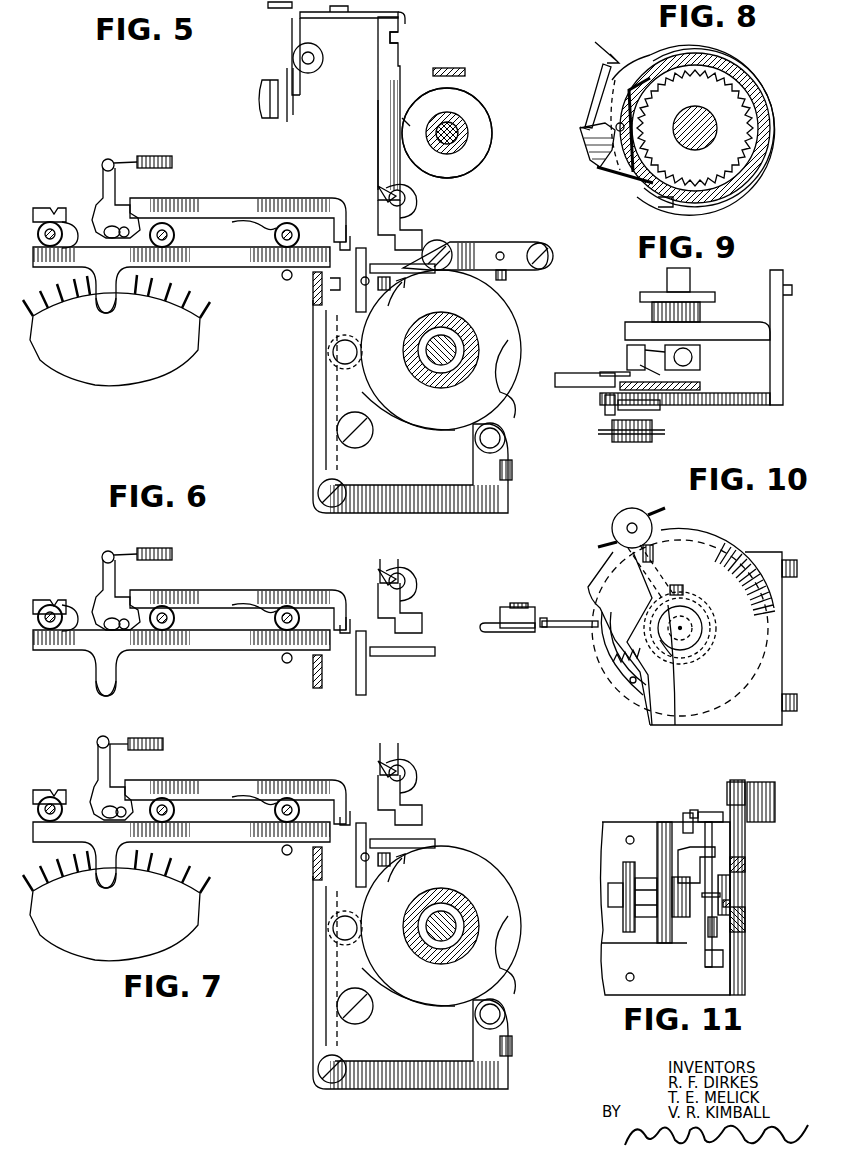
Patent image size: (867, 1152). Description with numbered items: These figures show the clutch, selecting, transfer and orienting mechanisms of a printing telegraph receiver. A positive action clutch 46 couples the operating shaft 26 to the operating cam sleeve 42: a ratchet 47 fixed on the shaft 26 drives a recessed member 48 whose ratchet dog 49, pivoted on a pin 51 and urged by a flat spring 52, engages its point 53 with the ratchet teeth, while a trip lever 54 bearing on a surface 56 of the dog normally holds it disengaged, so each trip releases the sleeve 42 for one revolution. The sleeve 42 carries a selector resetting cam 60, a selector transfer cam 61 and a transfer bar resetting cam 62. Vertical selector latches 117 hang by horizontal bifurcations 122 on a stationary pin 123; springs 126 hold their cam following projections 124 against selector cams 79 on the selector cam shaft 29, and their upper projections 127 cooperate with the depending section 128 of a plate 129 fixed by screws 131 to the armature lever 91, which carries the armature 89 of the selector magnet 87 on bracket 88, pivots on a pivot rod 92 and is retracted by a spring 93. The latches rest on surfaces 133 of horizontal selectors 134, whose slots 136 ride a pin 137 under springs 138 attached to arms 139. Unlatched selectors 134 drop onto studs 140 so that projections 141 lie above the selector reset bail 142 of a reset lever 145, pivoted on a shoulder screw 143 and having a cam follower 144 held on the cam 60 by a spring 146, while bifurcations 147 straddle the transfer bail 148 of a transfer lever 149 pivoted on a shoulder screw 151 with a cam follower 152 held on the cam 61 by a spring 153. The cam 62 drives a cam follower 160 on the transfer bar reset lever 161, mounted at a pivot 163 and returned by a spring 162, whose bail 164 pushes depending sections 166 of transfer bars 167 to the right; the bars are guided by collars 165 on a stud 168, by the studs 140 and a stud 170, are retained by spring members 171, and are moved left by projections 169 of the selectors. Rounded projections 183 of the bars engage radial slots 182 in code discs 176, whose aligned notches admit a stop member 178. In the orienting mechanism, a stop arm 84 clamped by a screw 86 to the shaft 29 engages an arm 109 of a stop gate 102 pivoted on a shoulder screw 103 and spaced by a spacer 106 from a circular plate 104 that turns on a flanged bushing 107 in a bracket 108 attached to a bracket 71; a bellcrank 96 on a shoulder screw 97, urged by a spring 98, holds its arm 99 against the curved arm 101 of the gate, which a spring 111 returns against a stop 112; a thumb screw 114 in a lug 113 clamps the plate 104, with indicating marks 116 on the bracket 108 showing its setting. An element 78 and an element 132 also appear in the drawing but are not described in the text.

In FIG. 5, the shaft 26 is at (456, 350).
In FIG. 7, the shaft 26 is at (470, 925).
In FIG. 8, the shaft 26 is at (691, 118).
In FIG. 5, the gear 29 is at (460, 142).
In FIG. 9, the gear 29 is at (667, 279).
In FIG. 11, the gear 29 is at (612, 888).
In FIG. 5, the hub 42 is at (452, 368).
In FIG. 7, the hub 42 is at (457, 925).
In FIG. 8, the ratchet assembly 46 is at (593, 44).
In FIG. 8, the ring 47 is at (727, 170).
In FIG. 8, the ratchet wheel 48 is at (737, 92).
In FIG. 8, the pawl 49 is at (590, 155).
In FIG. 8, the pivot pin 51 is at (620, 131).
In FIG. 8, the housing ring 52 is at (653, 62).
In FIG. 8, the ratchet teeth 53 is at (650, 106).
In FIG. 8, the lever arm 54 is at (602, 78).
In FIG. 8, the lever end 56 is at (580, 128).
In FIG. 5, the cam 60 is at (521, 334).
In FIG. 7, the cam 60 is at (443, 921).
In FIG. 5, the cam lobe 61 is at (420, 424).
In FIG. 7, the cam lobe 61 is at (408, 991).
In FIG. 5, the cam notch 62 is at (505, 378).
In FIG. 7, the cam notch 62 is at (458, 976).
In FIG. 9, the frame plate 71 is at (734, 322).
In FIG. 11, the frame plate 71 is at (628, 830).
In FIG. 5, the hub 78 is at (466, 140).
In FIG. 5, the disc 79 is at (468, 112).
In FIG. 10, the hub 84 is at (700, 615).
In FIG. 11, the hub 84 is at (716, 852).
In FIG. 9, the screw 86 is at (692, 357).
In FIG. 10, the screw 86 is at (683, 588).
In FIG. 5, the bracket 87 is at (262, 86).
In FIG. 10, the handle 88 is at (494, 633).
In FIG. 5, the rod 89 is at (289, 122).
In FIG. 5, the bracket 91 is at (291, 32).
In FIG. 5, the roller 92 is at (293, 59).
In FIG. 5, the clip 93 is at (268, 5).
In FIG. 10, the block 96 is at (500, 616).
In FIG. 10, the set screw 97 is at (522, 603).
In FIG. 10, the pin 98 is at (543, 618).
In FIG. 9, the rod 99 is at (578, 373).
In FIG. 10, the rod 99 is at (569, 621).
In FIG. 11, the rod 99 is at (733, 910).
In FIG. 9, the arm 101 is at (606, 372).
In FIG. 10, the arm 101 is at (600, 645).
In FIG. 9, the stop 102 is at (648, 366).
In FIG. 10, the stop 102 is at (655, 525).
In FIG. 11, the stop 102 is at (693, 810).
In FIG. 9, the bracket 103 is at (627, 348).
In FIG. 11, the bracket 103 is at (685, 815).
In FIG. 9, the lever 104 is at (752, 393).
In FIG. 10, the lever 104 is at (663, 710).
In FIG. 11, the lever 104 is at (713, 856).
In FIG. 11, the collar 106 is at (718, 812).
In FIG. 9, the pawl 107 is at (690, 384).
In FIG. 10, the pawl 107 is at (670, 652).
In FIG. 11, the pawl 107 is at (733, 889).
In FIG. 9, the frame 108 is at (783, 348).
In FIG. 10, the frame 108 is at (757, 712).
In FIG. 11, the frame 108 is at (745, 950).
In FIG. 10, the arm 109 is at (652, 592).
In FIG. 11, the arm 109 is at (660, 848).
In FIG. 10, the spring 111 is at (626, 650).
In FIG. 11, the spring 111 is at (708, 930).
In FIG. 10, the stud 112 is at (645, 695).
In FIG. 11, the stud 112 is at (720, 957).
In FIG. 9, the pin 113 is at (609, 407).
In FIG. 10, the pin 113 is at (670, 500).
In FIG. 11, the pin 113 is at (738, 782).
In FIG. 9, the knob 114 is at (633, 442).
In FIG. 10, the knob 114 is at (612, 527).
In FIG. 11, the knob 114 is at (775, 800).
In FIG. 10, the disc 116 is at (723, 543).
In FIG. 5, the plate 117 is at (384, 52).
In FIG. 6, the plate 117 is at (418, 568).
In FIG. 7, the plate 117 is at (414, 759).
In FIG. 5, the hook 122 is at (412, 192).
In FIG. 5, the pivot 123 is at (406, 200).
In FIG. 6, the pivot 123 is at (369, 574).
In FIG. 7, the pivot 123 is at (364, 761).
In FIG. 5, the edge 124 is at (400, 140).
In FIG. 5, the spring 126 is at (452, 68).
In FIG. 5, the notch 127 is at (399, 36).
In FIG. 5, the corner 128 is at (406, 19).
In FIG. 5, the bar 129 is at (362, 18).
In FIG. 5, the tab 131 is at (358, 6).
In FIG. 5, the notch 132 is at (420, 110).
In FIG. 5, the lug 133 is at (383, 194).
In FIG. 6, the lug 133 is at (400, 596).
In FIG. 7, the lug 133 is at (393, 787).
In FIG. 5, the link 134 is at (242, 198).
In FIG. 6, the link 134 is at (238, 594).
In FIG. 7, the link 134 is at (235, 784).
In FIG. 5, the pivot pin 136 is at (126, 228).
In FIG. 5, the lever 137 is at (100, 202).
In FIG. 6, the lever 137 is at (106, 595).
In FIG. 7, the lever 137 is at (96, 782).
In FIG. 5, the spring 138 is at (155, 151).
In FIG. 6, the spring 138 is at (146, 539).
In FIG. 7, the spring 138 is at (136, 745).
In FIG. 5, the hook 139 is at (112, 162).
In FIG. 7, the hook 139 is at (100, 745).
In FIG. 5, the roller 140 is at (176, 235).
In FIG. 6, the roller 140 is at (168, 617).
In FIG. 7, the roller 140 is at (168, 809).
In FIG. 5, the step 141 is at (416, 233).
In FIG. 6, the step 141 is at (416, 608).
In FIG. 7, the step 141 is at (412, 800).
In FIG. 5, the plate 142 is at (398, 274).
In FIG. 6, the plate 142 is at (409, 662).
In FIG. 7, the plate 142 is at (423, 833).
In FIG. 5, the roller 143 is at (553, 257).
In FIG. 5, the roller 144 is at (445, 250).
In FIG. 5, the strap 145 is at (516, 243).
In FIG. 5, the pin 146 is at (506, 280).
In FIG. 5, the bracket 147 is at (358, 238).
In FIG. 6, the bracket 147 is at (318, 597).
In FIG. 5, the arm 148 is at (356, 260).
In FIG. 6, the arm 148 is at (385, 663).
In FIG. 7, the arm 148 is at (328, 855).
In FIG. 5, the housing 149 is at (337, 402).
In FIG. 7, the housing 149 is at (380, 982).
In FIG. 5, the screw 151 is at (340, 432).
In FIG. 7, the screw 151 is at (324, 1006).
In FIG. 5, the pin 152 is at (333, 352).
In FIG. 7, the pin 152 is at (315, 928).
In FIG. 5, the screw 153 is at (392, 288).
In FIG. 7, the screw 153 is at (403, 865).
In FIG. 5, the roller 160 is at (506, 440).
In FIG. 7, the roller 160 is at (516, 1002).
In FIG. 5, the base 161 is at (413, 500).
In FIG. 7, the base 161 is at (415, 1091).
In FIG. 5, the screw 162 is at (513, 470).
In FIG. 7, the screw 162 is at (530, 1048).
In FIG. 5, the screw 163 is at (320, 488).
In FIG. 7, the screw 163 is at (303, 1074).
In FIG. 5, the tab 164 is at (314, 300).
In FIG. 6, the tab 164 is at (290, 673).
In FIG. 7, the tab 164 is at (295, 863).
In FIG. 5, the yoke 165 is at (66, 222).
In FIG. 6, the yoke 165 is at (85, 626).
In FIG. 5, the lug 166 is at (330, 285).
In FIG. 5, the lower link 167 is at (224, 262).
In FIG. 6, the lower link 167 is at (181, 663).
In FIG. 7, the lower link 167 is at (181, 855).
In FIG. 5, the bracket 168 is at (34, 255).
In FIG. 6, the bracket 168 is at (51, 652).
In FIG. 5, the tab 169 is at (341, 246).
In FIG. 6, the tab 169 is at (326, 620).
In FIG. 7, the tab 169 is at (326, 819).
In FIG. 5, the pin 170 is at (282, 275).
In FIG. 6, the pin 170 is at (267, 663).
In FIG. 7, the pin 170 is at (267, 851).
In FIG. 5, the stop 171 is at (48, 207).
In FIG. 6, the stop 171 is at (54, 585).
In FIG. 7, the stop 171 is at (49, 774).
In FIG. 5, the sector 176 is at (115, 362).
In FIG. 7, the sector 176 is at (115, 914).
In FIG. 5, the teeth 178 is at (160, 293).
In FIG. 7, the teeth 178 is at (116, 868).
In FIG. 5, the stem 182 is at (112, 314).
In FIG. 6, the stem end 183 is at (75, 692).
In FIG. 7, the stem end 183 is at (125, 890).